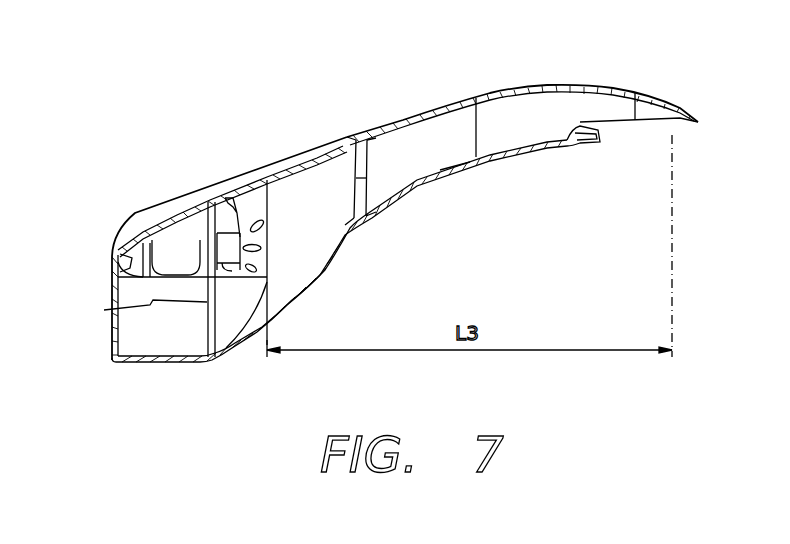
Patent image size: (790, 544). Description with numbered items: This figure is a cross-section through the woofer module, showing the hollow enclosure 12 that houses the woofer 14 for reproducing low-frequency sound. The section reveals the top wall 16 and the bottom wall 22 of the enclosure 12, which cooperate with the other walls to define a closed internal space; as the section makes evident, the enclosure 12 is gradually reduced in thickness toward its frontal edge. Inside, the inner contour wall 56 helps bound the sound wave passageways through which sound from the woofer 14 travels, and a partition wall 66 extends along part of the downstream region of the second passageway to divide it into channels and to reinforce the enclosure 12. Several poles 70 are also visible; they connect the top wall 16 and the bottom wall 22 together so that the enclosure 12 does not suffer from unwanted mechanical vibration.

The enclosure 12 is at (310, 137).
The woofer 14 is at (228, 198).
The top wall 16 is at (473, 95).
The bottom wall 22 is at (245, 348).
The inner contour wall 56 is at (433, 140).
The partition walls 66 is at (542, 128).
The poles 70 is at (127, 263).